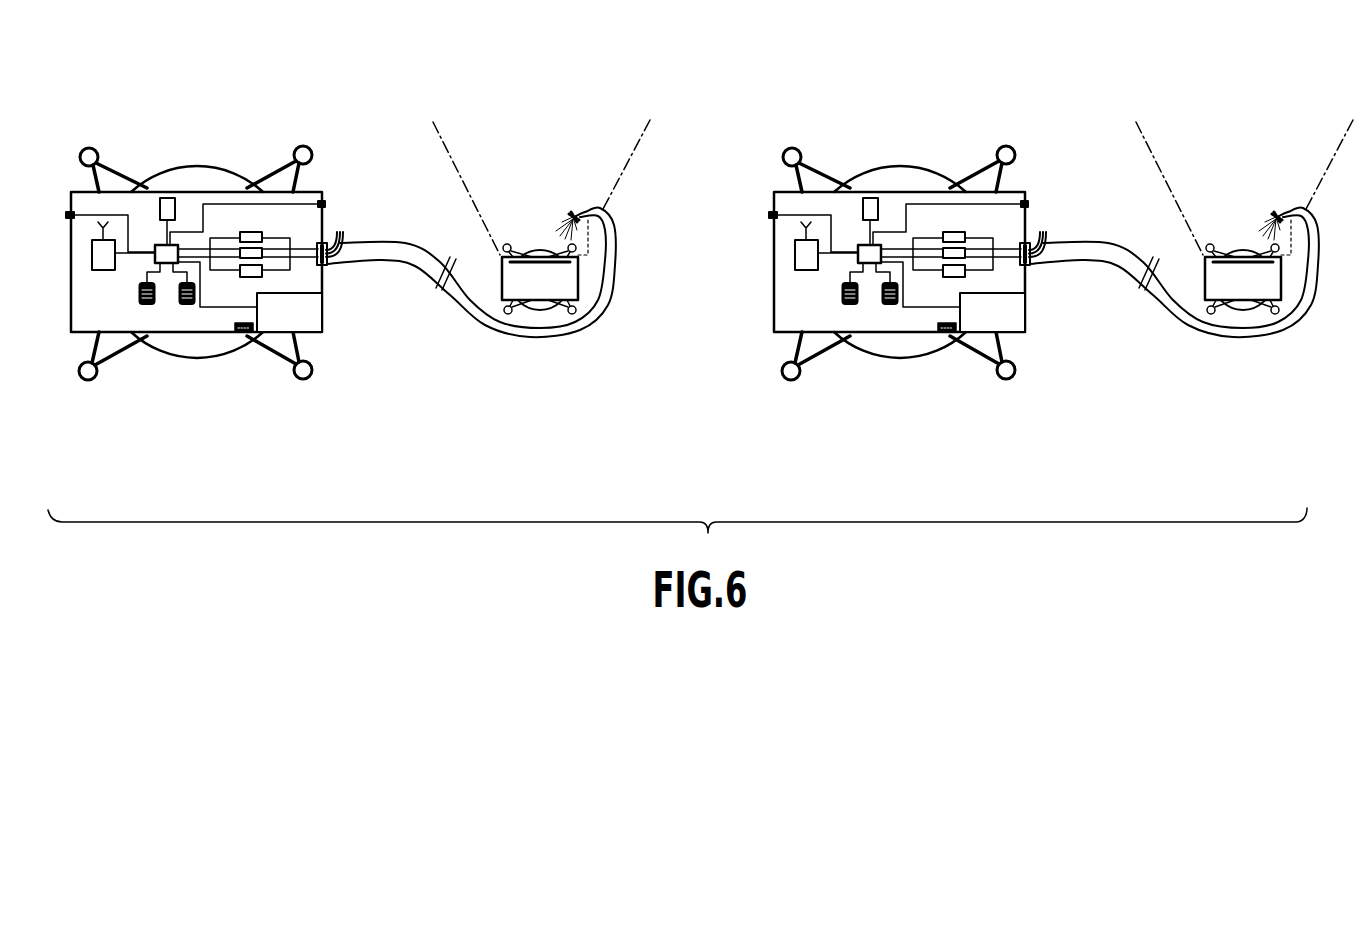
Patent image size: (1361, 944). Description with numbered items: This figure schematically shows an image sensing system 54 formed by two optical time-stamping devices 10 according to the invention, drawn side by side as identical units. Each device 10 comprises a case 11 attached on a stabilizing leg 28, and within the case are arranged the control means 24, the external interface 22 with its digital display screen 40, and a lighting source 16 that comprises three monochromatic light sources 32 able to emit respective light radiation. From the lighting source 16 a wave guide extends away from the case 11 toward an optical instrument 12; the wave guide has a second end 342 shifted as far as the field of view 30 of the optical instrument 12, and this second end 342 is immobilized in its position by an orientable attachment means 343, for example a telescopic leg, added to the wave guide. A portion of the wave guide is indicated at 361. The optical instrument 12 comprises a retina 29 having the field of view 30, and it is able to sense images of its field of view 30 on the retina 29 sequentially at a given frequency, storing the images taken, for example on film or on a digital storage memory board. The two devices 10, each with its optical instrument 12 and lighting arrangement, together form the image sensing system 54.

The optical time-stamping device 10 is at (547, 325).
The case 11 is at (548, 154).
The optical instrument 12 is at (851, 261).
The lighting source 16 is at (824, 282).
The external interface 22 is at (547, 290).
The control means 24 is at (462, 280).
The stabilizing leg 28 is at (548, 365).
The retina 29 is at (891, 280).
The field of view 30 is at (878, 187).
The monochromatic light sources 32 is at (688, 235).
The digital display screen 40 is at (647, 328).
The image sensing system 54 is at (713, 125).
The second end 342 is at (897, 228).
The orientable attachment means 343 is at (909, 201).
The tether line 361 is at (823, 272).